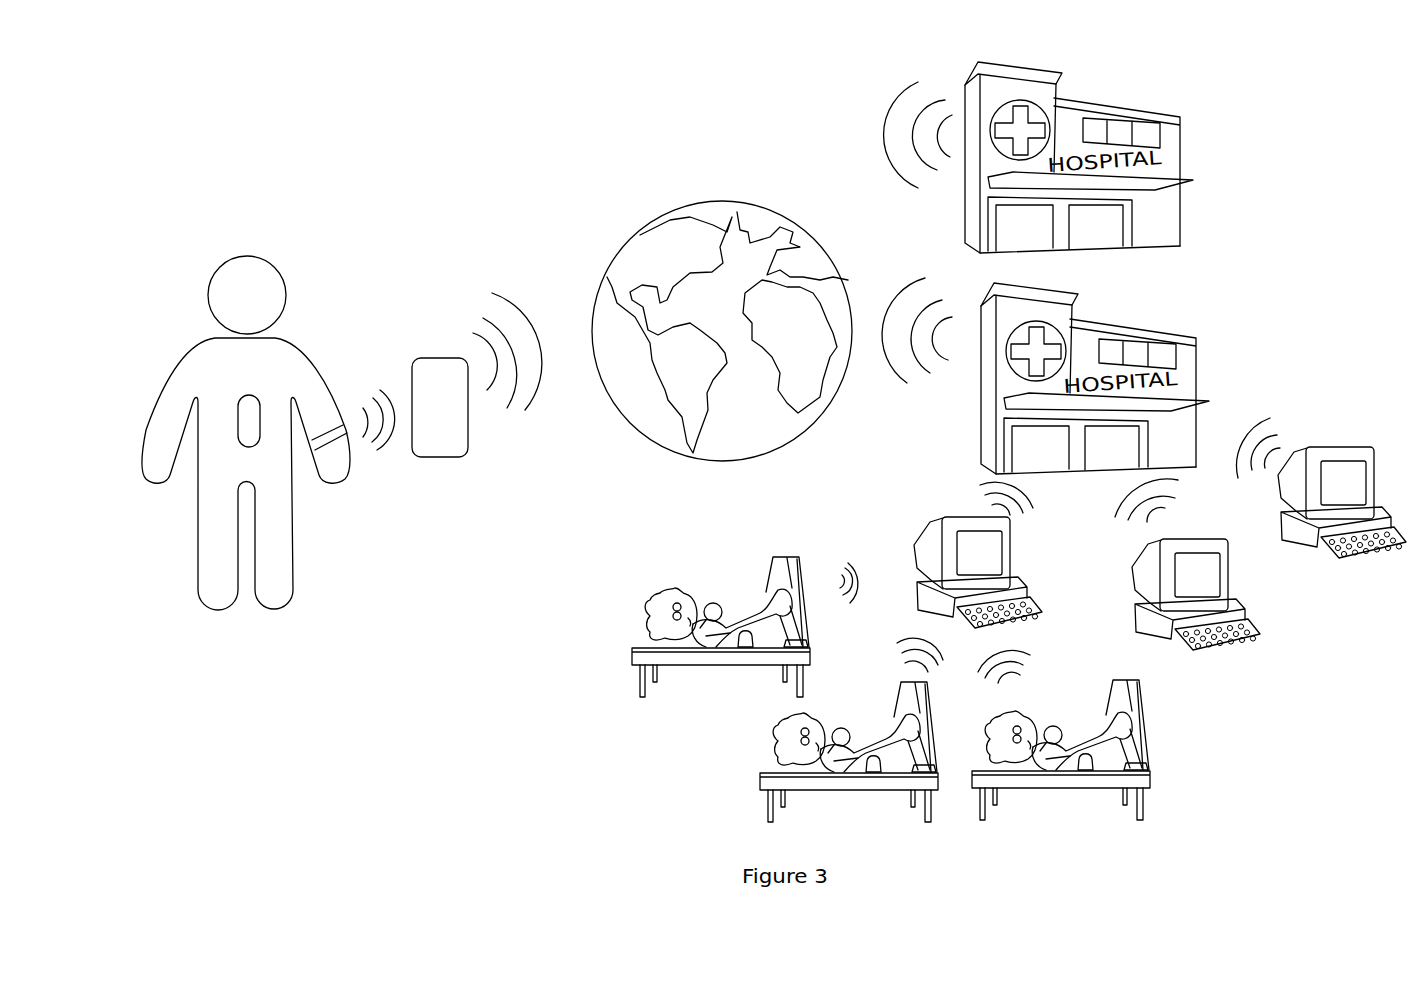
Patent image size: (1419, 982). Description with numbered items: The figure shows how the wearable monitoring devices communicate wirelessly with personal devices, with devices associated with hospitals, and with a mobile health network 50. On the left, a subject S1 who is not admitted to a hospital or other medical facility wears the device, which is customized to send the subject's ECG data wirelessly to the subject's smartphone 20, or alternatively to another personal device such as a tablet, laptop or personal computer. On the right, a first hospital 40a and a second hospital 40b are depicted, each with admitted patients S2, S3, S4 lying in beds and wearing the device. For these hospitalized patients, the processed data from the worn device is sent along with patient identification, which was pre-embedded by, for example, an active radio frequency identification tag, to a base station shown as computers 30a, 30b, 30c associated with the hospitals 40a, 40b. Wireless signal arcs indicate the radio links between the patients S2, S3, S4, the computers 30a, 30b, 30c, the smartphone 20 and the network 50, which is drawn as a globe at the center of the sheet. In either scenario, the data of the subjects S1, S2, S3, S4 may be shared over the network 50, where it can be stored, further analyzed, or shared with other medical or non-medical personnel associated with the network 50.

The subject S1 is at (197, 588).
The smartphone 20 is at (450, 457).
The mobile health network 50 is at (640, 233).
The hospital 40a is at (1180, 117).
The hospital 40b is at (1197, 338).
The computer 30a is at (1013, 565).
The computer 30b is at (1192, 538).
The computer 30c is at (1360, 448).
The patient S2 is at (633, 650).
The patient S3 is at (760, 781).
The patient S4 is at (1068, 788).